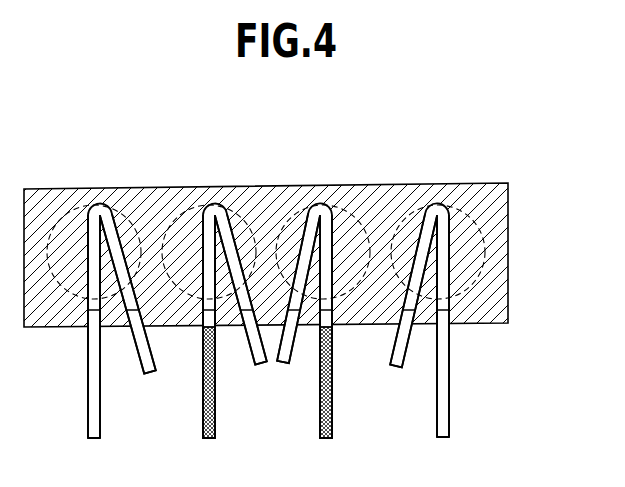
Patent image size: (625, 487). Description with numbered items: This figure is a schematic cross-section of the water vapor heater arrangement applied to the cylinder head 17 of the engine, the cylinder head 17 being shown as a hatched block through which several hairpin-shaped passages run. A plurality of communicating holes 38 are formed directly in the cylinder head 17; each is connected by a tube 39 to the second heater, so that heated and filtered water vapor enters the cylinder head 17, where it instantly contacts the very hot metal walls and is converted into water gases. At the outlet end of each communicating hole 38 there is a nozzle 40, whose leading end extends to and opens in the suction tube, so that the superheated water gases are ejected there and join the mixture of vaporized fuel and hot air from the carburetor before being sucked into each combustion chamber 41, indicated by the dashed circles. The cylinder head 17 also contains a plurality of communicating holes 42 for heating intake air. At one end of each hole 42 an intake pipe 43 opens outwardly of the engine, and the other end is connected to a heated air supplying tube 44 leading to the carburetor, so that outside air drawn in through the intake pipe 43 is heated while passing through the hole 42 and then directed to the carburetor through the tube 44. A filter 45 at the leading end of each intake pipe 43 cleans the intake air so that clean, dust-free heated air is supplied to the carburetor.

The cylinder head 17 is at (505, 203).
The communicating holes 38 is at (93, 203).
The tubes 39 is at (89, 428).
The nozzle 40 is at (149, 372).
The combustion chamber 41 is at (72, 217).
The communicating holes for heating intake air 42 is at (222, 202).
The intake pipe 43 is at (319, 413).
The heated air supplying tube 44 is at (262, 367).
The filter 45 is at (203, 406).